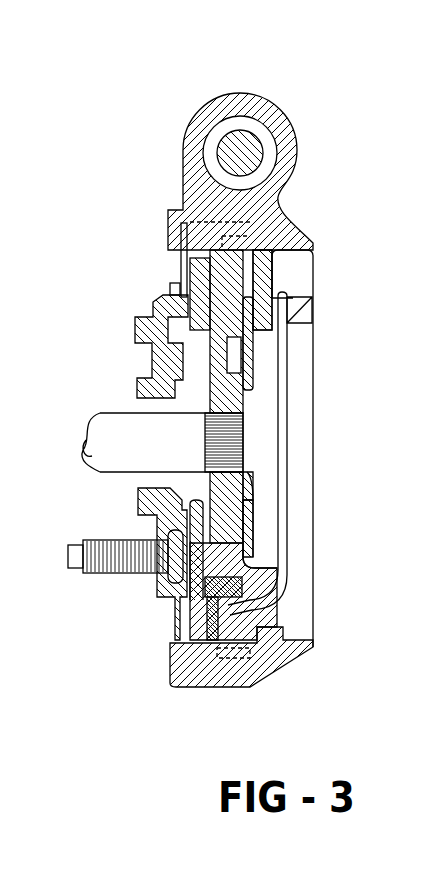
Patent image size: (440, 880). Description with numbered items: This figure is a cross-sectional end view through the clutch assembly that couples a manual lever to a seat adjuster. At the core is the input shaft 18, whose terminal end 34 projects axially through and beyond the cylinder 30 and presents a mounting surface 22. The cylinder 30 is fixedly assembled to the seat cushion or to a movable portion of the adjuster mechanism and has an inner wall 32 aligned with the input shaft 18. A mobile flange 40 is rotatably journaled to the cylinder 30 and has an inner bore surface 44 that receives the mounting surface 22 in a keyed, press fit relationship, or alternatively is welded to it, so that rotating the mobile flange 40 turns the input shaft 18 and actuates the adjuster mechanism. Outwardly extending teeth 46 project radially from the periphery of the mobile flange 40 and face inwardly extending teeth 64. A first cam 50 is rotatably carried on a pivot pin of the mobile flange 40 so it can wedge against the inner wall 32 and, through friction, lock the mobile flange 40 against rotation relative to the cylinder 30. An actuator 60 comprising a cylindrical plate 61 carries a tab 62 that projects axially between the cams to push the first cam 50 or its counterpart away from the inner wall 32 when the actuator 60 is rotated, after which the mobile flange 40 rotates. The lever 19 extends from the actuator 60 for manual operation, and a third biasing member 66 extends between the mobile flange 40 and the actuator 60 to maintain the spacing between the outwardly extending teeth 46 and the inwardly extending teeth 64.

The input shaft 18 is at (98, 472).
The lever 19 is at (260, 150).
The mounting surface 22 is at (250, 440).
The cylinder 30 is at (135, 333).
The inner wall 32 is at (183, 275).
The terminal end 34 is at (250, 470).
The mobile flange 40 is at (290, 268).
The inner bore surface 44 is at (250, 425).
The outwardly extending teeth 46 is at (290, 222).
The inwardly extending teeth 64 is at (290, 222).
The first cam 50 is at (187, 313).
The actuator 60 is at (267, 680).
The cylindrical plate 61 is at (290, 365).
The tab 62 is at (180, 573).
The third biasing member 66 is at (288, 513).